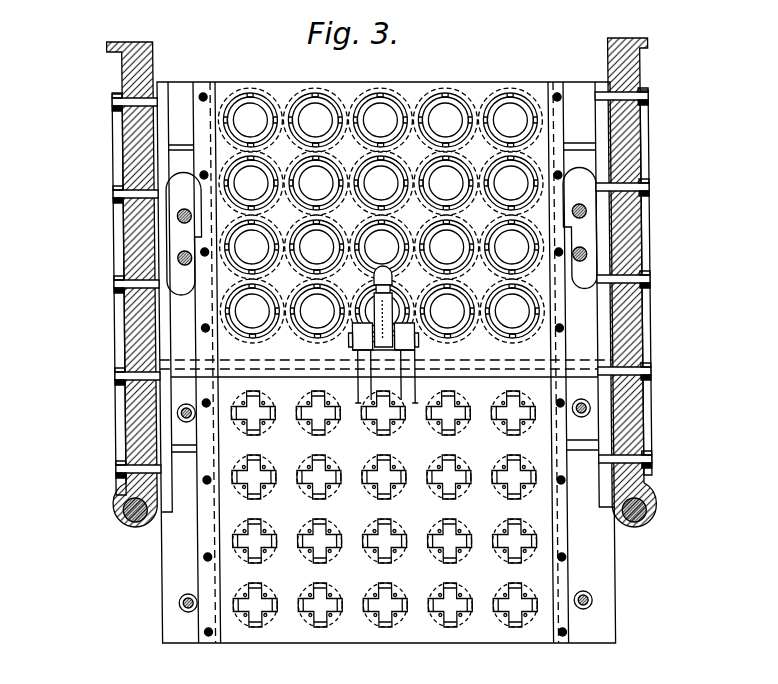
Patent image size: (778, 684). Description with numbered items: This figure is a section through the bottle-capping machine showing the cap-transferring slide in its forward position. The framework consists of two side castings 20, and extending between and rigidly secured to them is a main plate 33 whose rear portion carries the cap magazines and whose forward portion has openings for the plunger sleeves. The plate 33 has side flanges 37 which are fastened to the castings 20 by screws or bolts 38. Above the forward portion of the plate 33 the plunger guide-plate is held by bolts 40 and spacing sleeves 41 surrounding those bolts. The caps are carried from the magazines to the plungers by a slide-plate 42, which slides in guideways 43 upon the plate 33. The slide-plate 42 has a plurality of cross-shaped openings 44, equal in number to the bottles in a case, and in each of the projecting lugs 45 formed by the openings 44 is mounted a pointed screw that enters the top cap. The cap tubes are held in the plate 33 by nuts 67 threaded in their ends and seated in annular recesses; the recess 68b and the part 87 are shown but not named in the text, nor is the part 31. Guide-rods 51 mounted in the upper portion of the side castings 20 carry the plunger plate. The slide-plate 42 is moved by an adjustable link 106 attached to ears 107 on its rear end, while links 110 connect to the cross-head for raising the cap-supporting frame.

The side castings 20 is at (138, 255).
The circular die openings 31 is at (315, 115).
The plate 33 is at (578, 108).
The side flanges 37 is at (163, 323).
The screws or bolts 38 is at (117, 193).
The bolts 40 is at (178, 610).
The spacing sleeves 41 is at (183, 612).
The slide-plate 42 is at (333, 420).
The guideways 43 is at (211, 532).
The openings 44 is at (447, 483).
The projecting lugs 45 is at (313, 425).
The guide-rods 51 is at (655, 509).
The nuts 67 is at (495, 100).
The die cavity 68b is at (390, 98).
The lower locating pin 87 is at (182, 258).
The adjustable link 106 is at (381, 272).
The ears 107 is at (413, 347).
The links 110 is at (182, 216).